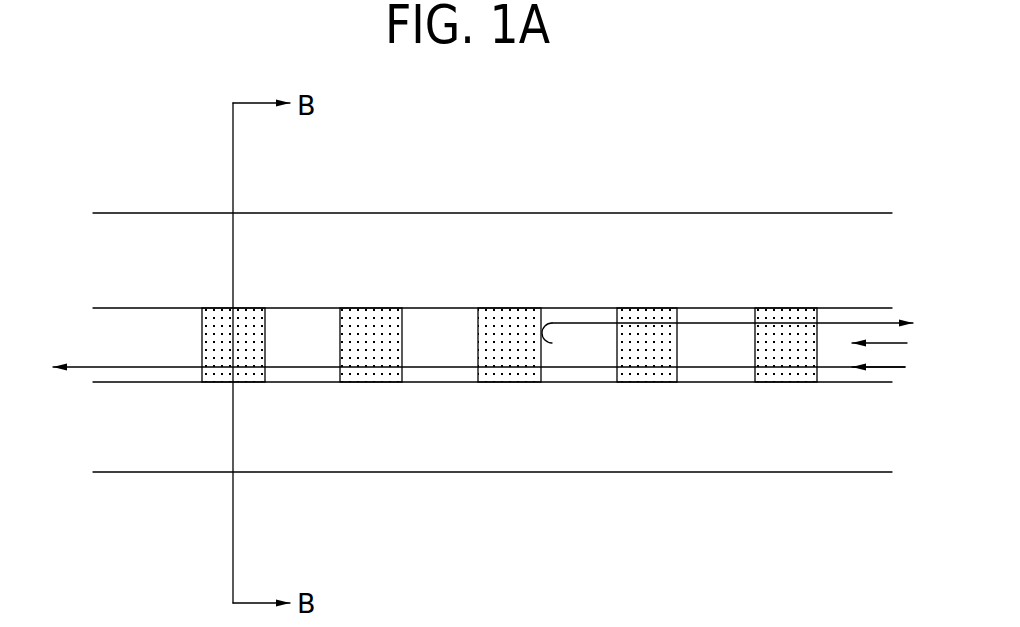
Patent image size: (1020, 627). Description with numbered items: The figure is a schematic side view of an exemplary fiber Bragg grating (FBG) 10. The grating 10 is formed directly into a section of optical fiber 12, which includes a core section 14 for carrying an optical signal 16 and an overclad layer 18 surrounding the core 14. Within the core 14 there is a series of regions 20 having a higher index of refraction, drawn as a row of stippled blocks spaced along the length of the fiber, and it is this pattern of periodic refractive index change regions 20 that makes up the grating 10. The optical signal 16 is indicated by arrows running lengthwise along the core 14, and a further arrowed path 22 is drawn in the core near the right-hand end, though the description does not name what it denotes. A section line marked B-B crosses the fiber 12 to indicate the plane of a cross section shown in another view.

The fiber Bragg grating 10 is at (660, 150).
The optical fiber 12 is at (779, 212).
The core section 14 is at (114, 307).
The optical signal 16 is at (898, 372).
The overclad layer 18 is at (331, 225).
The regions having a higher index of refraction 20 is at (252, 310).
The fluid supply conduit 22 is at (907, 341).